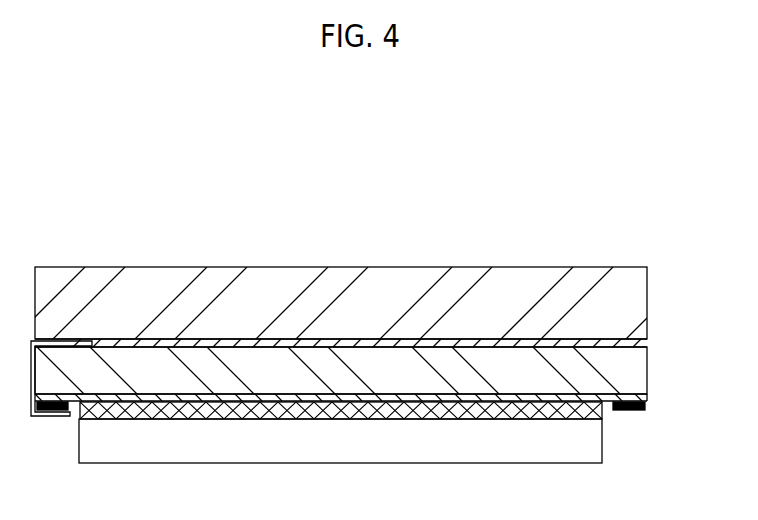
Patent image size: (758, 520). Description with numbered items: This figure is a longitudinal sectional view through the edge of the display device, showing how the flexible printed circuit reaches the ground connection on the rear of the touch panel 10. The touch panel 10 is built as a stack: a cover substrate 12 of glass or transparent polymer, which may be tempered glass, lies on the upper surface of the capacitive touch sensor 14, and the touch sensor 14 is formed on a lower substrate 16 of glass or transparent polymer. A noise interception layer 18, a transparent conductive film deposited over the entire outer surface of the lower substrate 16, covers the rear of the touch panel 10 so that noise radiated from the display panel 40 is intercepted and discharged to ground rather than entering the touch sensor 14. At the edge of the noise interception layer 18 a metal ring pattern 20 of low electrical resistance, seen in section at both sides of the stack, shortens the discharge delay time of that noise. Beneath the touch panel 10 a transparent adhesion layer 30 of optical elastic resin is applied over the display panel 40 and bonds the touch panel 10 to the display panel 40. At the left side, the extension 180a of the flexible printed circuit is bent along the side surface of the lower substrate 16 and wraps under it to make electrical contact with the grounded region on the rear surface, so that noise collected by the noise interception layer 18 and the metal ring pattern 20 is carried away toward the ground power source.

The touch panel 10 is at (383, 336).
The cover substrate 12 is at (645, 303).
The touch sensor 14 is at (645, 343).
The lower substrate 16 is at (645, 367).
The noise interception layer 18 is at (367, 393).
The metal ring pattern 20 is at (647, 407).
The adhesion layer 30 is at (600, 410).
The display panel 40 is at (597, 438).
The extension 180a is at (37, 418).